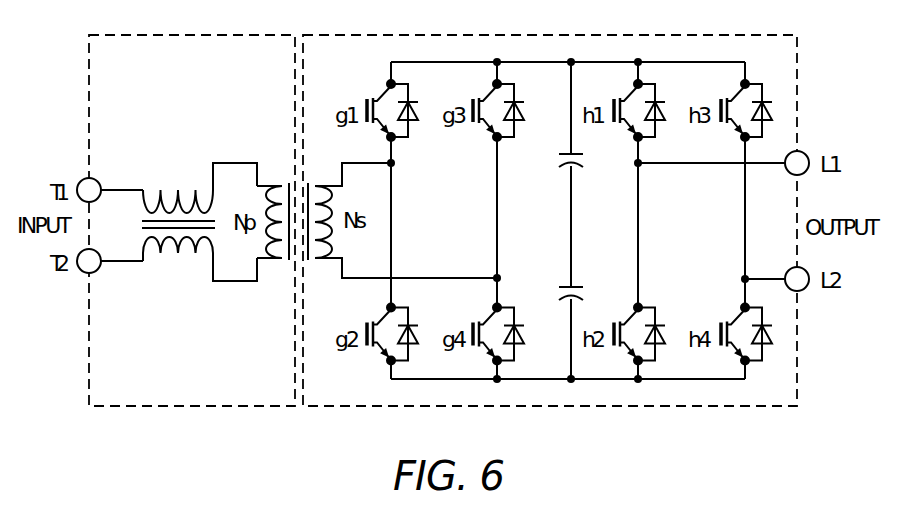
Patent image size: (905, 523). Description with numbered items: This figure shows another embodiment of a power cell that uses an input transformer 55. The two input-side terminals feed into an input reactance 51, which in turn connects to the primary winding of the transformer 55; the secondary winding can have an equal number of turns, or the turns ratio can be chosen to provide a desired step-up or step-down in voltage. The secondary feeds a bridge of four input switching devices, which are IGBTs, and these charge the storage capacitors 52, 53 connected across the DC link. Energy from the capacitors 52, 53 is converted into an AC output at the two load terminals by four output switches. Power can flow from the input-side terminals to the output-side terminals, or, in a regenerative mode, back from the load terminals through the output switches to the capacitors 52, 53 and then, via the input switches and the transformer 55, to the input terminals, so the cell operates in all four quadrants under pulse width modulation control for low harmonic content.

The input reactance 51 is at (174, 256).
The capacitor 52 is at (563, 160).
The capacitor 53 is at (558, 290).
The input transformer 55 is at (279, 272).